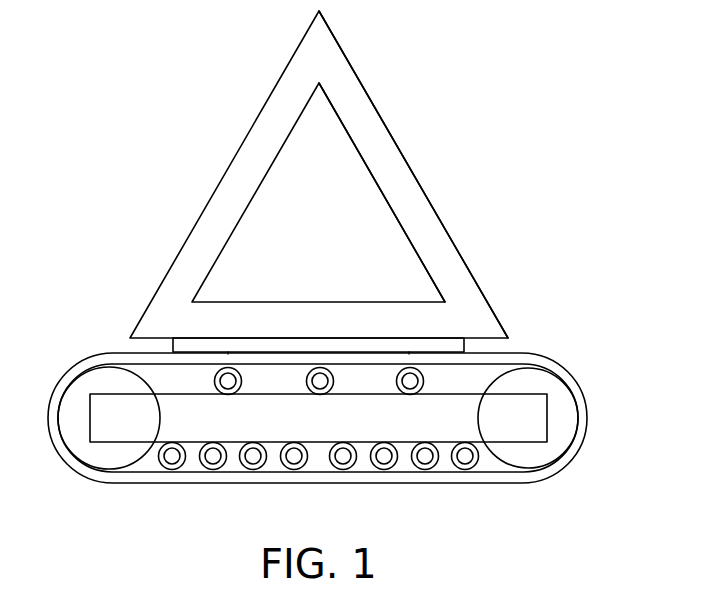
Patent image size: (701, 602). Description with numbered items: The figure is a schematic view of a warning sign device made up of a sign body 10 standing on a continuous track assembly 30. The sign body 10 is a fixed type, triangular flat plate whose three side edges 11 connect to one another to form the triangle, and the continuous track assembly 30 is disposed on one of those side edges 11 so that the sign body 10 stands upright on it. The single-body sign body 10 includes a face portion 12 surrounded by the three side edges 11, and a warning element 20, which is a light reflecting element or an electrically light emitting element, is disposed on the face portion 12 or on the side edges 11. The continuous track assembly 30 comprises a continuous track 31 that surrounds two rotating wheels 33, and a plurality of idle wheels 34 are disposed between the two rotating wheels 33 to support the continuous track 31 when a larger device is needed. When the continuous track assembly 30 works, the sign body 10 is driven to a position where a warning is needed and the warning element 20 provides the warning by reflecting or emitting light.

The sign body 10 is at (245, 140).
The side edges 11 is at (395, 138).
The face portion 12 is at (325, 138).
The warning element 20 is at (432, 232).
The continuous track assembly 30 is at (315, 420).
The continuous track 31 is at (190, 473).
The rotating wheels 33 is at (107, 458).
The idle wheels 34 is at (385, 470).